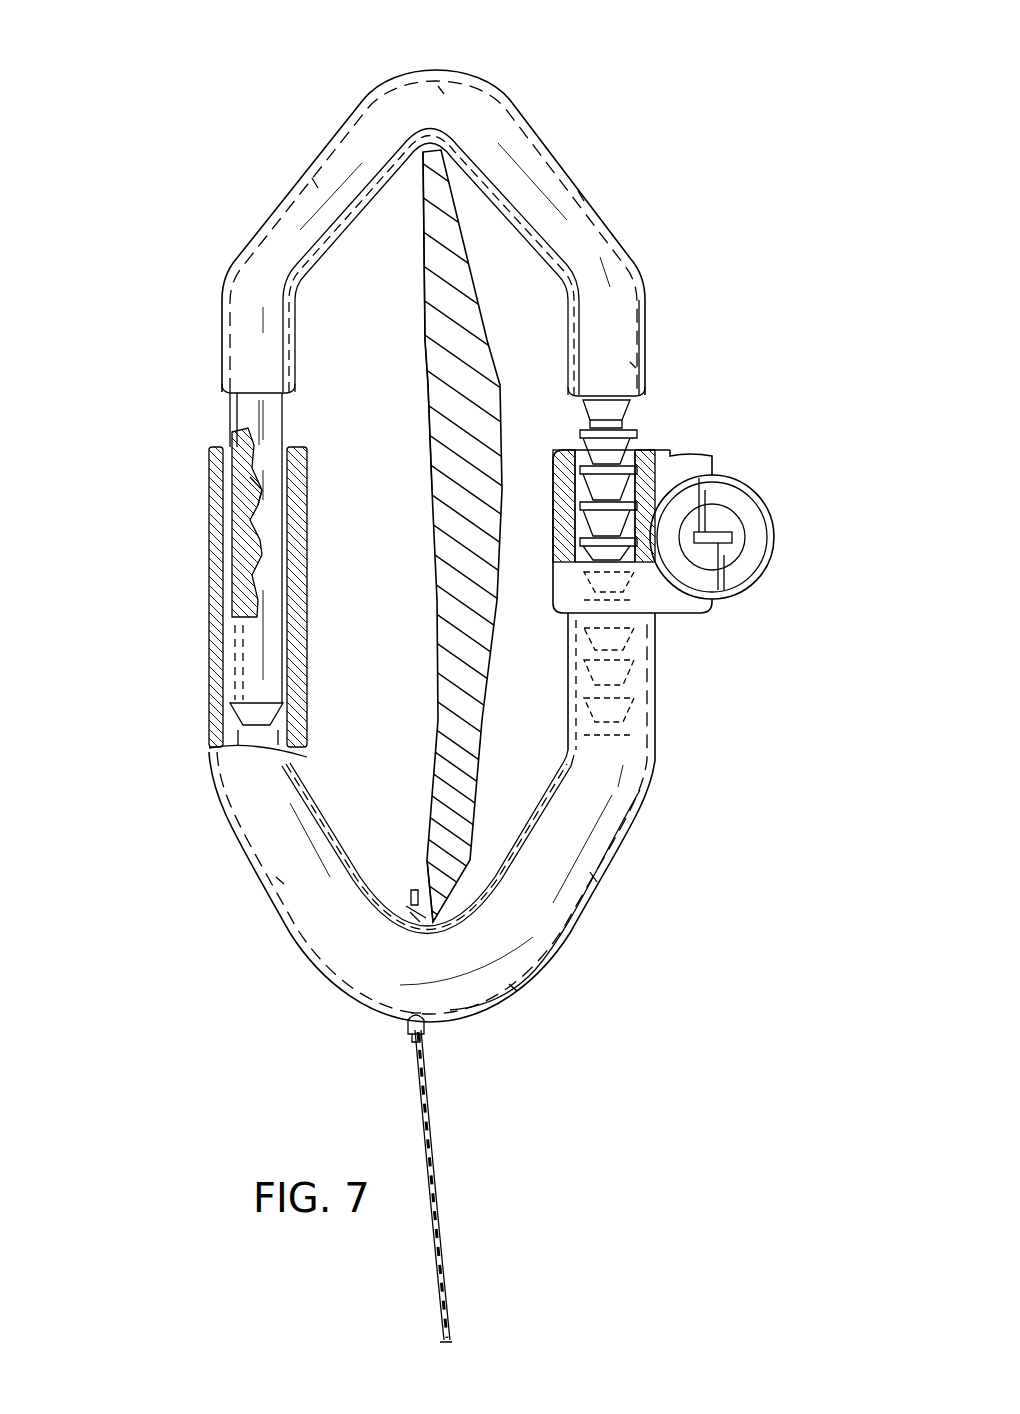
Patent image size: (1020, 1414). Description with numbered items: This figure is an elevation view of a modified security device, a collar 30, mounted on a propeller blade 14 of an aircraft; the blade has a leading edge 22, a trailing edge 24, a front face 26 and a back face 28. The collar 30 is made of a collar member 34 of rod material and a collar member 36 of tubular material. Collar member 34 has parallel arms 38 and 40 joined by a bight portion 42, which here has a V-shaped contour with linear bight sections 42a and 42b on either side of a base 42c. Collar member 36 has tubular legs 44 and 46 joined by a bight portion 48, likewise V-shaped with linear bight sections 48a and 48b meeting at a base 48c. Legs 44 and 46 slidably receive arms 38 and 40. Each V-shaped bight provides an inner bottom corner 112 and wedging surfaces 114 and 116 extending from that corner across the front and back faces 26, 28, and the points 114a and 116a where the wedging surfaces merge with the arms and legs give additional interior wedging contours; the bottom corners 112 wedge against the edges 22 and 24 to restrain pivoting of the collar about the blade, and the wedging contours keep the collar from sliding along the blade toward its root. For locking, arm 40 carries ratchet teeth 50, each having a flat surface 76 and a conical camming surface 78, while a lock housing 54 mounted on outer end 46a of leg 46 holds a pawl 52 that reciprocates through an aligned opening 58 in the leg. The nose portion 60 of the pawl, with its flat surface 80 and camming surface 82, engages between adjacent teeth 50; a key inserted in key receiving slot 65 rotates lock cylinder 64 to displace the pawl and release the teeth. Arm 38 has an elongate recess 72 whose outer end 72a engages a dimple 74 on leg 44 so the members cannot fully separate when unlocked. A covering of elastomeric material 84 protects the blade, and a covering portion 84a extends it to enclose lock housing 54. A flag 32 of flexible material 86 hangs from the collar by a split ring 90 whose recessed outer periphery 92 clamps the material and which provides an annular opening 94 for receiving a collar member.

The propeller blade 14 is at (434, 603).
The leading edge 22 is at (431, 147).
The trailing edge 24 is at (433, 925).
The front face 26 is at (493, 367).
The back face 28 is at (428, 393).
The collar 30 is at (143, 455).
The flag 32 is at (443, 1212).
The collar member 34 is at (548, 140).
The collar member 36 is at (290, 935).
The arm 38 is at (237, 410).
The arm 40 is at (633, 365).
The bight portion 42 is at (405, 97).
The bight section 42a is at (315, 183).
The bight section 42b is at (580, 196).
The base 42c is at (441, 90).
The tubular leg 44 is at (227, 677).
The tubular leg 46 is at (657, 675).
The outer end 46a is at (585, 450).
The bight portion 48 is at (535, 945).
The bight section 48a is at (280, 880).
The bight section 48b is at (592, 878).
The base 48c is at (513, 987).
The ratchet teeth 50 is at (633, 430).
The pawl 52 is at (612, 520).
The lock housing 54 is at (768, 497).
The opening 58 is at (657, 553).
The nose portion 60 is at (605, 502).
The lock cylinder 64 is at (748, 538).
The key receiving slot 65 is at (720, 535).
The recess 72 is at (247, 567).
The outer end 72a is at (237, 667).
The dimple 74 is at (233, 502).
The flat surface 76 is at (645, 423).
The camming surface 78 is at (618, 445).
The flat surface 80 is at (640, 523).
The camming surface 82 is at (566, 483).
The elastomeric material covering 84 is at (610, 222).
The covering portion 84a is at (682, 455).
The flexible material 86 is at (430, 1150).
The split ring 90 is at (412, 1018).
The outer periphery 92 is at (413, 1028).
The annular opening 94 is at (413, 1010).
The inner bottom corner 112 is at (422, 154).
The wedging surface 114 is at (512, 227).
The point 114a is at (565, 293).
The wedging surface 116 is at (328, 253).
The point 116a is at (300, 288).